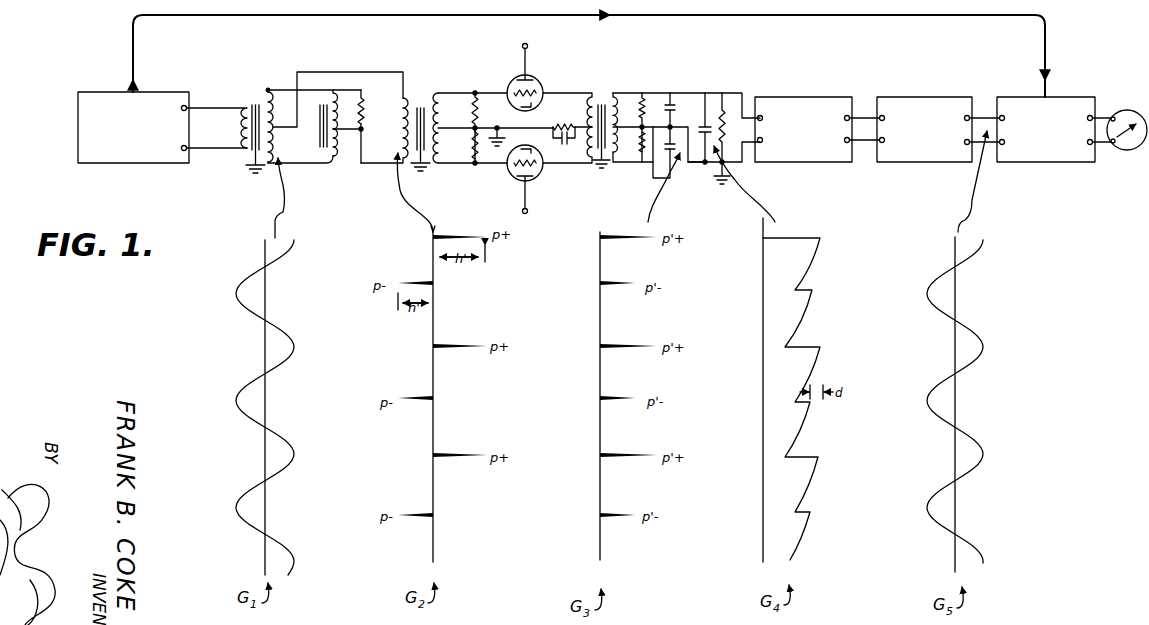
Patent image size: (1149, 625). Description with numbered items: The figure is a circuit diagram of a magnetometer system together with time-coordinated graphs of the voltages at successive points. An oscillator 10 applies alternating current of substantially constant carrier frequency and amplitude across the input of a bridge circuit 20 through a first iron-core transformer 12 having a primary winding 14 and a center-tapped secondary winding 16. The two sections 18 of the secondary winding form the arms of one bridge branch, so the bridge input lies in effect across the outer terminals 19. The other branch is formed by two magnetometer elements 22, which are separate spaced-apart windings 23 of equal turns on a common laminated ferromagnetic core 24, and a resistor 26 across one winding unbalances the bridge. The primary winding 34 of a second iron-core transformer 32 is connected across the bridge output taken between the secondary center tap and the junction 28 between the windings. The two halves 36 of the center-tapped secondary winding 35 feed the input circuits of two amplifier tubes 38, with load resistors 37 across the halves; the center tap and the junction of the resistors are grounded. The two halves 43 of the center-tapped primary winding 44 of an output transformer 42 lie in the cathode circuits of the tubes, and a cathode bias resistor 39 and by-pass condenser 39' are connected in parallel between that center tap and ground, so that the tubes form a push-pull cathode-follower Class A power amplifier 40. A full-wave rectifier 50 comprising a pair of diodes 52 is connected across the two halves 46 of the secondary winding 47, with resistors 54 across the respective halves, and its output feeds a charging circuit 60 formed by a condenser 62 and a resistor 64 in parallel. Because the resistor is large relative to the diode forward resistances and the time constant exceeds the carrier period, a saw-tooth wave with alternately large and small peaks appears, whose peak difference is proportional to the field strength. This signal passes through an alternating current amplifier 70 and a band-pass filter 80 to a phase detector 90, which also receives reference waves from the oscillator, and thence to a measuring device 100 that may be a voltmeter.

The oscillator 10 is at (178, 92).
The first iron-core transformer 12 is at (250, 106).
The primary winding 14 is at (245, 149).
The center-tapped secondary winding 16 is at (270, 124).
The sections of the secondary winding 18 is at (275, 102).
The outer terminals of the secondary winding 19 is at (264, 103).
The bridge circuit 20 is at (312, 145).
The magnetometer elements 22 is at (331, 162).
The windings 23 is at (343, 96).
The magnetic core 24 is at (326, 101).
The resistor 26 is at (364, 108).
The junction 28 is at (362, 130).
The second iron-core transformer 32 is at (420, 128).
The primary winding 34 is at (421, 106).
The center-tapped secondary winding 35 is at (435, 156).
The halves of the secondary winding 36 is at (466, 94).
The load resistors 37 is at (472, 119).
The amplifier tubes 38 is at (542, 81).
The cathode bias resistor 39 is at (572, 116).
The by-pass condenser 39' is at (566, 154).
The push-pull cathode-follower Class A power amplifier 40 is at (533, 127).
The output transformer 42 is at (598, 132).
The halves of the primary winding 43 is at (589, 97).
The center-tapped primary winding 44 is at (597, 156).
The halves of the secondary winding 46 is at (623, 98).
The secondary winding 47 is at (616, 157).
The full-wave rectifier 50 is at (686, 125).
The diodes 52 is at (673, 102).
The resistors 54 is at (645, 99).
The charging circuit 60 is at (708, 106).
The condenser 62 is at (704, 163).
The resistor 64 is at (728, 108).
The alternating current amplifier 70 is at (801, 95).
The band-pass filter 80 is at (921, 95).
The phase detector 90 is at (1079, 95).
The measuring device 100 is at (1137, 99).